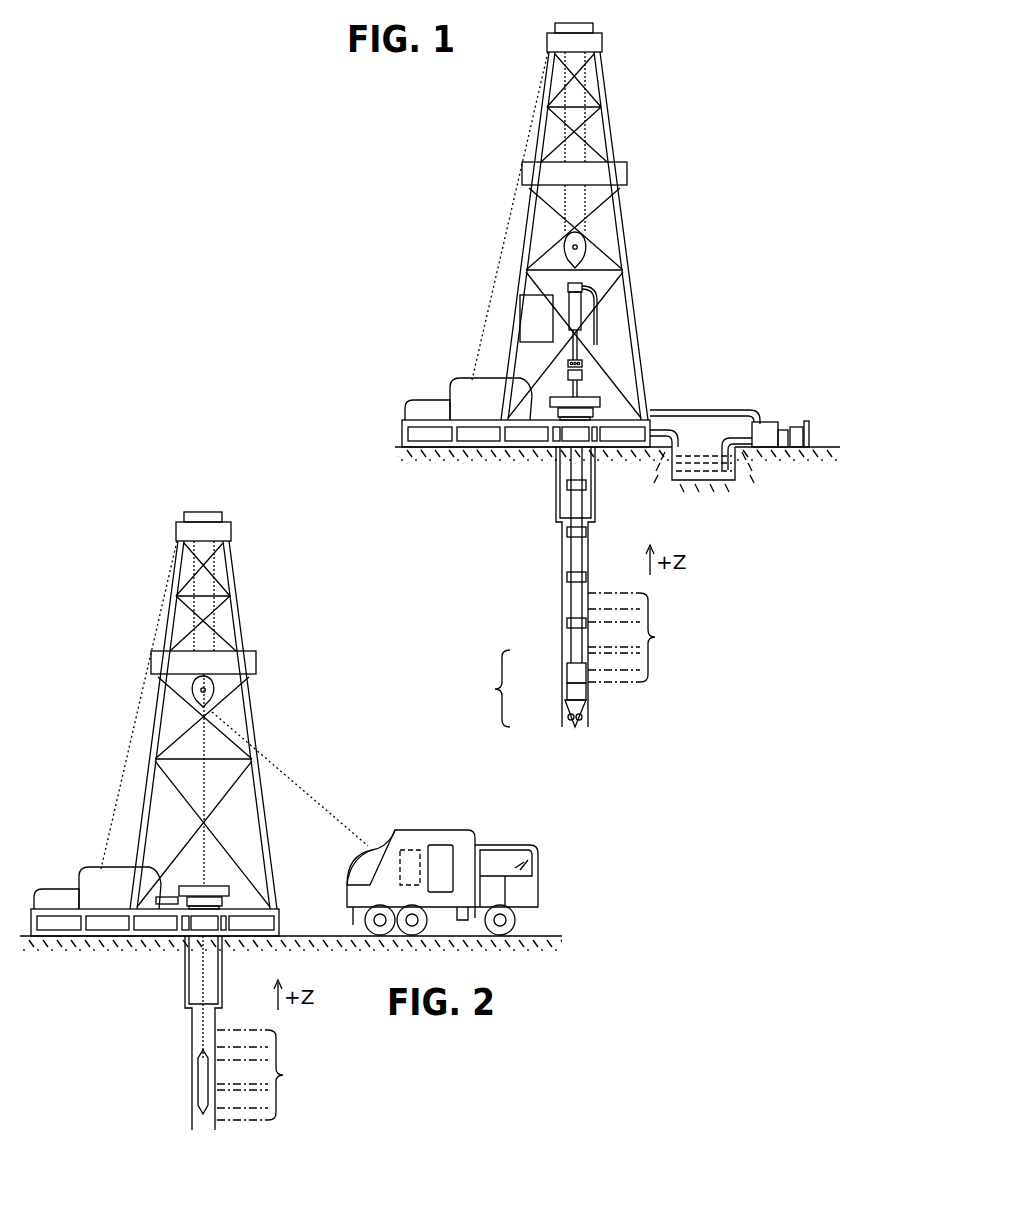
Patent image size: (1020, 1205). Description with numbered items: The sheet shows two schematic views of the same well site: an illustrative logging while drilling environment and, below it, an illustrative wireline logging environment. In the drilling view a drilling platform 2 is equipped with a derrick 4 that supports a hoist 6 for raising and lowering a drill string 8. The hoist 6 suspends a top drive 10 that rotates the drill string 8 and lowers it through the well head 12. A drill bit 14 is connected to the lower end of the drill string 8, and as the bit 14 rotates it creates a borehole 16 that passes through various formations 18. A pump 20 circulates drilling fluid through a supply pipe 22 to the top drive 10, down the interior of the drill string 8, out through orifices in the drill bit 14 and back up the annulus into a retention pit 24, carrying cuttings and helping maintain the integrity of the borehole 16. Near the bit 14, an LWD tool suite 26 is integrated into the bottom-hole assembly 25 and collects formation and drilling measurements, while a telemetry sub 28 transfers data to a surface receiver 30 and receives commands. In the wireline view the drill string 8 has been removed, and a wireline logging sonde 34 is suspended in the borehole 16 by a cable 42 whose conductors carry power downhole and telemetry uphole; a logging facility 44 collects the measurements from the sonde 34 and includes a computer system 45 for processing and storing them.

In FIG. 1, the drilling platform 2 is at (402, 428).
In FIG. 2, the drilling platform 2 is at (281, 916).
In FIG. 1, the derrick 4 is at (609, 143).
In FIG. 2, the derrick 4 is at (266, 876).
In FIG. 1, the hoist 6 is at (579, 247).
In FIG. 2, the hoist 6 is at (210, 690).
In FIG. 1, the drill string 8 is at (581, 562).
In FIG. 1, the top drive 10 is at (576, 305).
In FIG. 1, the well head 12 is at (598, 397).
In FIG. 2, the well head 12 is at (222, 885).
In FIG. 1, the drill bit 14 is at (584, 715).
In FIG. 1, the borehole 16 is at (590, 570).
In FIG. 1, the formations 18 is at (637, 637).
In FIG. 2, the formations 18 is at (266, 1075).
In FIG. 1, the pump 20 is at (762, 426).
In FIG. 1, the supply pipe 22 is at (714, 412).
In FIG. 1, the retention pit 24 is at (685, 474).
In FIG. 1, the bottom-hole assembly 25 is at (481, 688).
In FIG. 1, the LWD tool suite 26 is at (572, 692).
In FIG. 1, the telemetry sub 28 is at (571, 676).
In FIG. 1, the surface receiver 30 is at (582, 363).
In FIG. 2, the wireline logging sonde 34 is at (200, 1078).
In FIG. 2, the cable 42 is at (260, 760).
In FIG. 2, the logging facility 44 is at (468, 830).
In FIG. 2, the computer system 45 is at (403, 848).